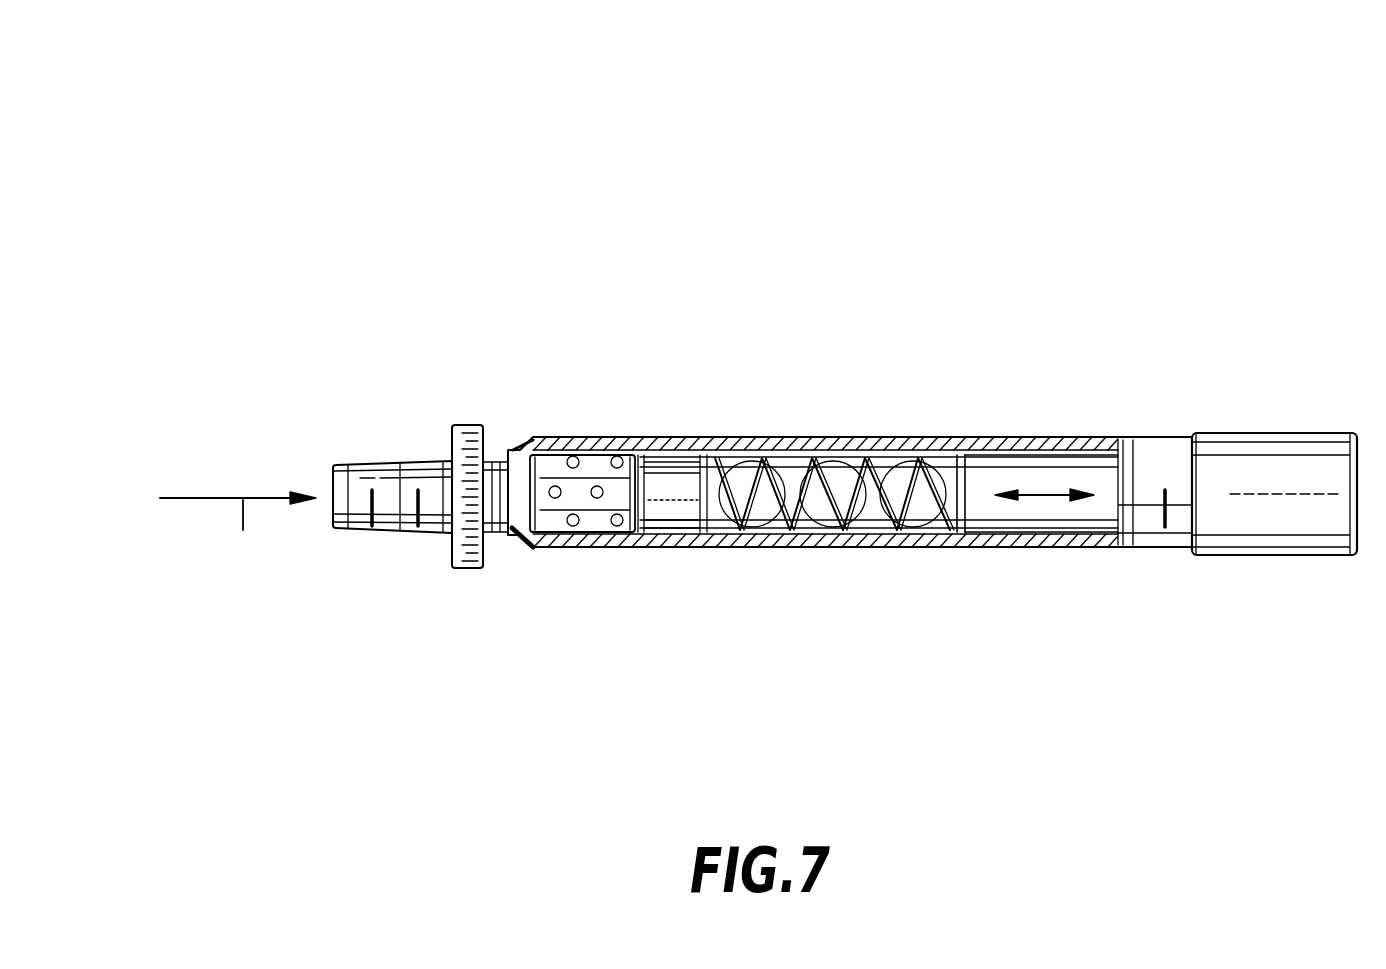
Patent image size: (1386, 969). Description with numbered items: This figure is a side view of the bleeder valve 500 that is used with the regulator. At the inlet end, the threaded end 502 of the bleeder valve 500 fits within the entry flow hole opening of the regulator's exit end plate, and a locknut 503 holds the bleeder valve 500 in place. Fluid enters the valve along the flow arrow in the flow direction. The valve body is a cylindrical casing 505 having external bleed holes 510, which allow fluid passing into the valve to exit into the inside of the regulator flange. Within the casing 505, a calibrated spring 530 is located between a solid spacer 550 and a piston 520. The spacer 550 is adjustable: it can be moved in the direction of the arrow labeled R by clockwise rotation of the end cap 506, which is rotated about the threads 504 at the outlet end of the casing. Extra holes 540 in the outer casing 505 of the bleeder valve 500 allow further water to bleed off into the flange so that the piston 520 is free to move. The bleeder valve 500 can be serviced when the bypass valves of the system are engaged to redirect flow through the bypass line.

The bleeder valve 500 is at (779, 89).
The threaded end 502 is at (405, 470).
The locknut 503 is at (467, 437).
The threads 504 is at (1158, 530).
The cylindrical casing 505 is at (553, 546).
The end cap 506 is at (1238, 475).
The external bleed holes 510 is at (616, 458).
The piston 520 is at (670, 503).
The calibrated spring 530 is at (780, 460).
The extra holes 540 is at (895, 526).
The solid spacer 550 is at (1036, 596).